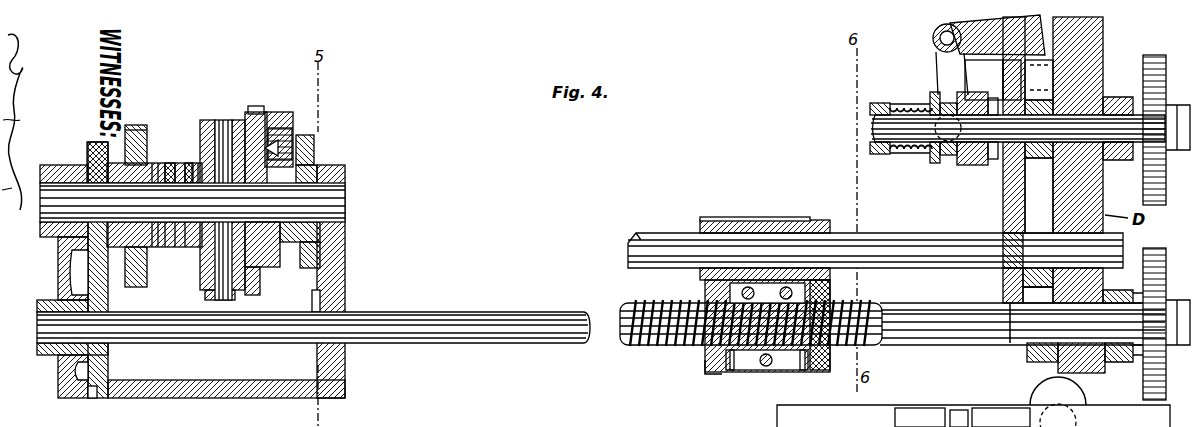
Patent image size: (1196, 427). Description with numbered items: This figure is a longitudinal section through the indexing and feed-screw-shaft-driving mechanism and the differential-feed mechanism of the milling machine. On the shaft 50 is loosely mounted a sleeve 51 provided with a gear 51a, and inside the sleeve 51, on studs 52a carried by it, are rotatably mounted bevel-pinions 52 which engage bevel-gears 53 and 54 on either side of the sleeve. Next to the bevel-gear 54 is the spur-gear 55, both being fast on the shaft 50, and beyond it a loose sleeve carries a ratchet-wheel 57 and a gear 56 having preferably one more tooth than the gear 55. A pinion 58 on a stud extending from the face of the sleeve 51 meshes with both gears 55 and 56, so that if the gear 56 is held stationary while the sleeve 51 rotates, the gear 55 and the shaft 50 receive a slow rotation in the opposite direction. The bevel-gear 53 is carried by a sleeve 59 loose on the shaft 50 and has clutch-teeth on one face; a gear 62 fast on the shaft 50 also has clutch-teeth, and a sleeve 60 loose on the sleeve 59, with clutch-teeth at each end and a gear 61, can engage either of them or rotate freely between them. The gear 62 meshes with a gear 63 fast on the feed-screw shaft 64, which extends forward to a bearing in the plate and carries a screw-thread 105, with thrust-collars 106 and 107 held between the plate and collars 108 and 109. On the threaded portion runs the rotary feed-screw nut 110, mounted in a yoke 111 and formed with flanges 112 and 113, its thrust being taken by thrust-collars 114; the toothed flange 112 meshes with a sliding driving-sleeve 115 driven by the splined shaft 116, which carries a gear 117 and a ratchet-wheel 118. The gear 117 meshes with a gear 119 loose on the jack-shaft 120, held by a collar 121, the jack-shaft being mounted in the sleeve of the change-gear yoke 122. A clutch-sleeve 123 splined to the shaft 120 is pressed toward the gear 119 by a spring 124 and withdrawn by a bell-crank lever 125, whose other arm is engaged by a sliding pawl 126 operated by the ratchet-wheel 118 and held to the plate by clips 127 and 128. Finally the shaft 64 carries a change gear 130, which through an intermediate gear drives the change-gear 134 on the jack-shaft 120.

The shaft 50 is at (345, 210).
The sleeve 51 is at (246, 128).
The gear 51a is at (268, 128).
The bevel-pinions 52 is at (208, 145).
The studs 52a is at (222, 140).
The bevel-gear 53 is at (188, 166).
The bevel-gear 54 is at (262, 248).
The spur-gear 55 is at (296, 252).
The gear 56 is at (316, 170).
The ratchet-wheel 57 is at (314, 146).
The pinion 58 is at (290, 140).
The sleeve 59 is at (162, 159).
The clutch sleeve 60 is at (171, 165).
The gear 61 is at (144, 126).
The gear 62 is at (90, 160).
The gear 63 is at (99, 362).
The feed-screw shaft 64 is at (522, 315).
The screw-thread 105 is at (687, 310).
The thrust-collar 106 is at (1053, 363).
The thrust-collar 107 is at (1112, 366).
The collar 108 is at (1024, 353).
The collar 109 is at (1130, 366).
The rotary feed-screw nut 110 is at (712, 373).
The yoke 111 is at (758, 368).
The flange 112 is at (704, 371).
The flange 113 is at (825, 372).
The thrust-collars 114 is at (732, 375).
The sliding driving-sleeve 115 is at (724, 221).
The splined shaft 116 is at (908, 237).
The gear 117 is at (1004, 281).
The ratchet-wheel 118 is at (1005, 220).
The gear 119 is at (961, 160).
The jack-shaft 120 is at (1018, 128).
The collar 121 is at (970, 166).
The change-gear yoke 122 is at (1127, 163).
The clutch-sleeve 123 is at (951, 155).
The spring 124 is at (918, 106).
The bell-crank lever 125 is at (938, 58).
The sliding pawl 126 is at (1012, 174).
The clip 127 is at (1012, 297).
The clip 128 is at (1004, 72).
The change gear 130 is at (1170, 272).
The change-gear 134 is at (1148, 76).